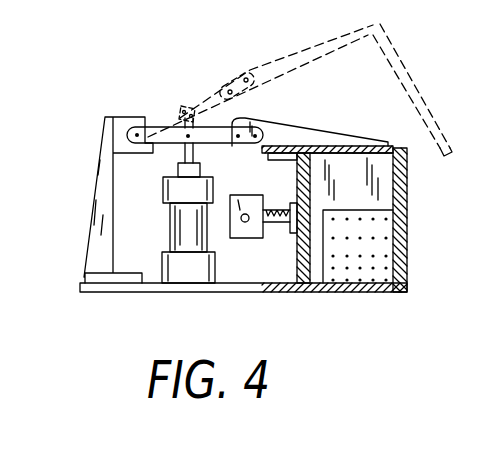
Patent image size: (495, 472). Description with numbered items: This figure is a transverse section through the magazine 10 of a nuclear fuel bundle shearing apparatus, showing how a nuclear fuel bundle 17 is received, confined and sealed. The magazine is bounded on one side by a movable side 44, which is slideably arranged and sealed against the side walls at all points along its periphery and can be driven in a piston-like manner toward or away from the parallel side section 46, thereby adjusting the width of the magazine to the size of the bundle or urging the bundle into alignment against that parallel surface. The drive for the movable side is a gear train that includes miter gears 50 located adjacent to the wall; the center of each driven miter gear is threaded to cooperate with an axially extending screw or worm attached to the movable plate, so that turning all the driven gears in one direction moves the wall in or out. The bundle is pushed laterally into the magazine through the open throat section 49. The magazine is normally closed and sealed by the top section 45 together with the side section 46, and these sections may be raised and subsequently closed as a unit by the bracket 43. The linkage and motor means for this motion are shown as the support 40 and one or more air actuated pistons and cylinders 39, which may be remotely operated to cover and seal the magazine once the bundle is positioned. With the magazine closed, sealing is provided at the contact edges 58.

The magazine 10 is at (385, 203).
The nuclear fuel bundle 17 is at (375, 230).
The air actuated pistons and cylinders 39 is at (190, 284).
The support 40 is at (113, 118).
The bracket 43 is at (322, 43).
The movable side 44 is at (303, 267).
The top section 45 is at (338, 52).
The side section 46 is at (424, 100).
The open throat section 49 is at (382, 172).
The miter gears 50 is at (250, 238).
The contact edges 58 is at (402, 283).